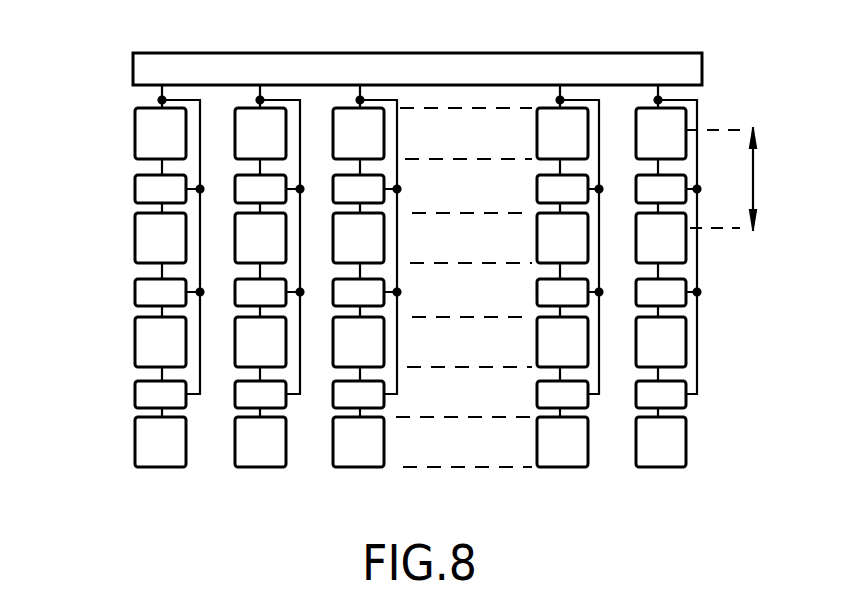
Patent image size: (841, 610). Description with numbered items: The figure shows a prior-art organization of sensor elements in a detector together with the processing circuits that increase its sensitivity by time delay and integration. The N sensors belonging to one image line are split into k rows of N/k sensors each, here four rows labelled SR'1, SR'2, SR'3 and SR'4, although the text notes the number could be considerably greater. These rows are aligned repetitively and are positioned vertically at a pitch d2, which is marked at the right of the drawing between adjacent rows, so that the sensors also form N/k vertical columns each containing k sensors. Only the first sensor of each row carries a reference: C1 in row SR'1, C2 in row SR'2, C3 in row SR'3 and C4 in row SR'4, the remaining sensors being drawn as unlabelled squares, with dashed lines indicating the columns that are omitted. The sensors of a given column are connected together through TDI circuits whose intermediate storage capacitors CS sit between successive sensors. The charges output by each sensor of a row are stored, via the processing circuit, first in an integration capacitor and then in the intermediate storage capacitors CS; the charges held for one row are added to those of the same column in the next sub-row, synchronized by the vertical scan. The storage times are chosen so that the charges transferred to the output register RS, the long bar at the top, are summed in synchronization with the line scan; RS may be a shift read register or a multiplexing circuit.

The output register RS is at (701, 53).
The sensor row SR'4 is at (360, 133).
The sensor row SR'3 is at (361, 238).
The sensor row SR'2 is at (364, 342).
The sensor row SR'1 is at (364, 442).
The sensor C4 is at (160, 133).
The sensor C3 is at (160, 238).
The sensor C2 is at (160, 342).
The sensor C1 is at (160, 442).
The intermediate storage capacitor CS is at (410, 291).
The pitch d2 is at (738, 179).